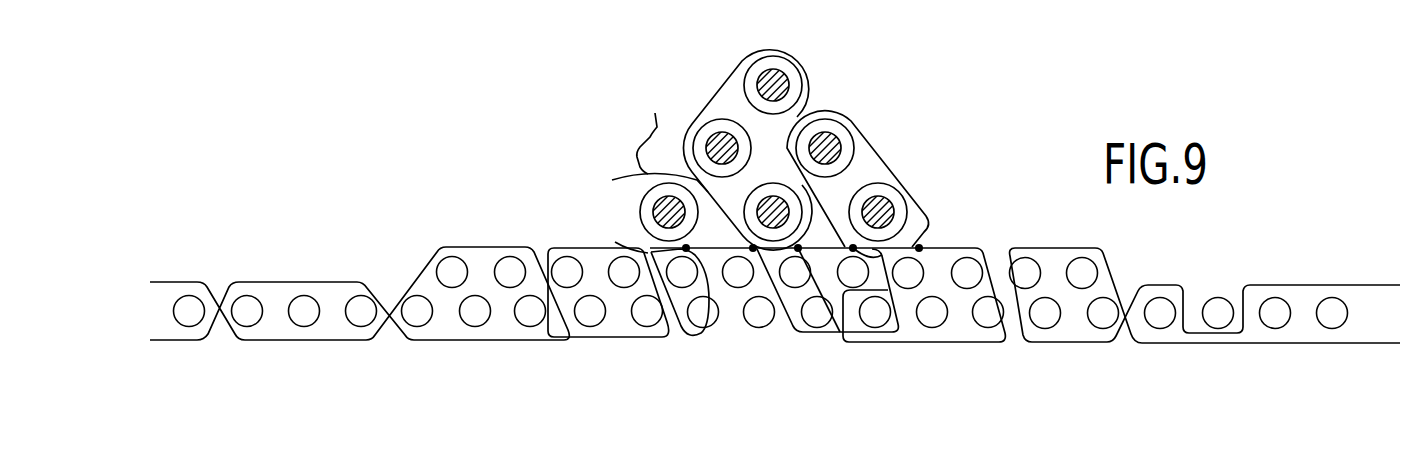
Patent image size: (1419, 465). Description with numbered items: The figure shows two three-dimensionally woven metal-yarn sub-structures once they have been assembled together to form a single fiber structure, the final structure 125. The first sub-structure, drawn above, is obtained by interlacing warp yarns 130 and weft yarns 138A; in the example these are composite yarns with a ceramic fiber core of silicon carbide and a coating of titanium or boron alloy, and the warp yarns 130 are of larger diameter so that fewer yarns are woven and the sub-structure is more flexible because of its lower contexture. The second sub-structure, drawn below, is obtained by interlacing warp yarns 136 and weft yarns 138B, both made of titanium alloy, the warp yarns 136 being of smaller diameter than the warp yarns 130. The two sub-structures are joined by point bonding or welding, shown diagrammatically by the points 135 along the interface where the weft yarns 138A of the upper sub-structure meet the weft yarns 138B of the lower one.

The final structure 125 is at (602, 76).
The warp yarns 130 is at (864, 150).
The points 135 is at (798, 248).
The warp yarns 136 is at (361, 307).
The weft yarns 138A is at (712, 98).
The weft yarns 138B is at (1271, 283).